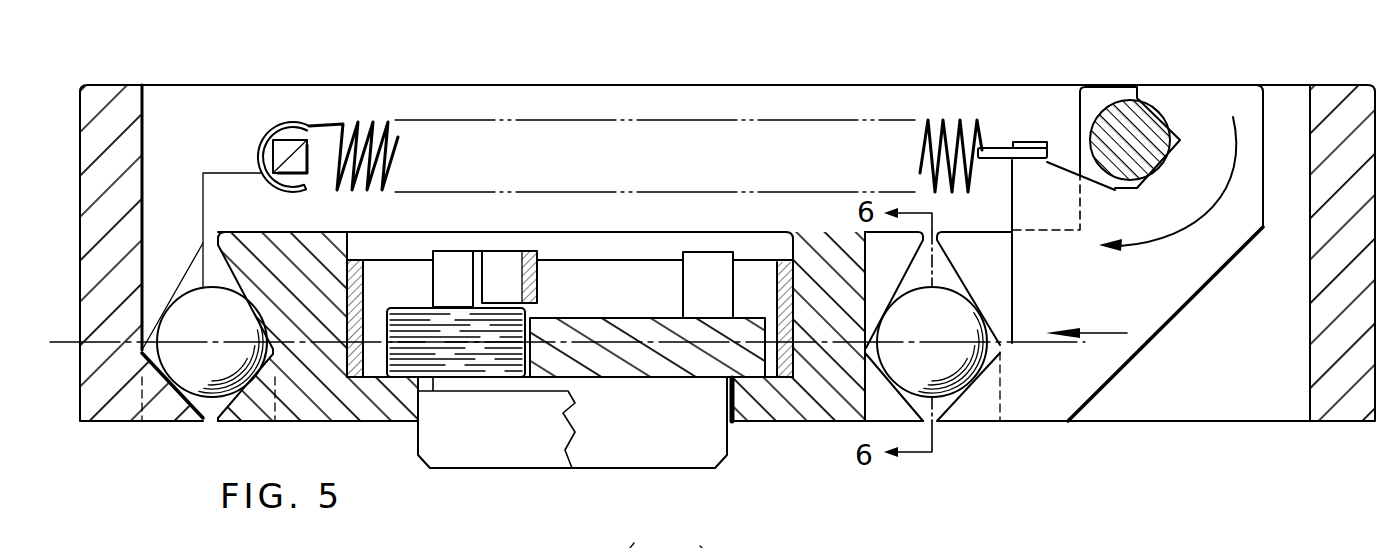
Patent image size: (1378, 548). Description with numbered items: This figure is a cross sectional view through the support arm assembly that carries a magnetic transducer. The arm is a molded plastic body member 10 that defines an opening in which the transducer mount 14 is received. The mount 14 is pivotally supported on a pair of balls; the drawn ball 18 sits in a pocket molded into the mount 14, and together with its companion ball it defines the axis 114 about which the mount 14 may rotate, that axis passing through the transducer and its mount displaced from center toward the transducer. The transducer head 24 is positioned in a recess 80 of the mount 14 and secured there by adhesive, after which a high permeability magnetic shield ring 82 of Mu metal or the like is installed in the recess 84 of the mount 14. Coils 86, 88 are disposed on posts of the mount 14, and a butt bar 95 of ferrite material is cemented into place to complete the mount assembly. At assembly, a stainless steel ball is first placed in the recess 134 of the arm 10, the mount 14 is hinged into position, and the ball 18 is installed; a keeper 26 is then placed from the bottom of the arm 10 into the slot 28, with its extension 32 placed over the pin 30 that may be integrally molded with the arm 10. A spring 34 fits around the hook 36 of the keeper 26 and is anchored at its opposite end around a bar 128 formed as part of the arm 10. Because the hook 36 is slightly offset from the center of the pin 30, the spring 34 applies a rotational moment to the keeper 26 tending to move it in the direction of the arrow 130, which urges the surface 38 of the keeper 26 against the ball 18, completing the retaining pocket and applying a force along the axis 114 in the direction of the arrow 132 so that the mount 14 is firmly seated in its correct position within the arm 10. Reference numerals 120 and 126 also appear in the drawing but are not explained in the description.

The body member 10 is at (90, 177).
The transducer mount 14 is at (316, 397).
The ball 18 is at (950, 308).
The transducer head 24 is at (450, 453).
The keeper 26 is at (1180, 313).
The slot 28 is at (1283, 103).
The pin 30 is at (1097, 125).
The extension 32 is at (1140, 92).
The spring 34 is at (362, 120).
The hook 36 is at (1022, 142).
The surface 38 is at (963, 382).
The recess 80 is at (733, 413).
The magnetic shield ring 82 is at (795, 250).
The recess 84 is at (362, 246).
The coil 86 is at (453, 354).
The coil 88 is at (412, 327).
The butt bar 95 is at (500, 272).
The axis 114 is at (70, 342).
The element 120 is at (721, 542).
The element 126 is at (649, 532).
The bar 128 is at (290, 150).
The arrow 130 is at (1205, 217).
The arrow 132 is at (1088, 328).
The recess 134 is at (165, 302).